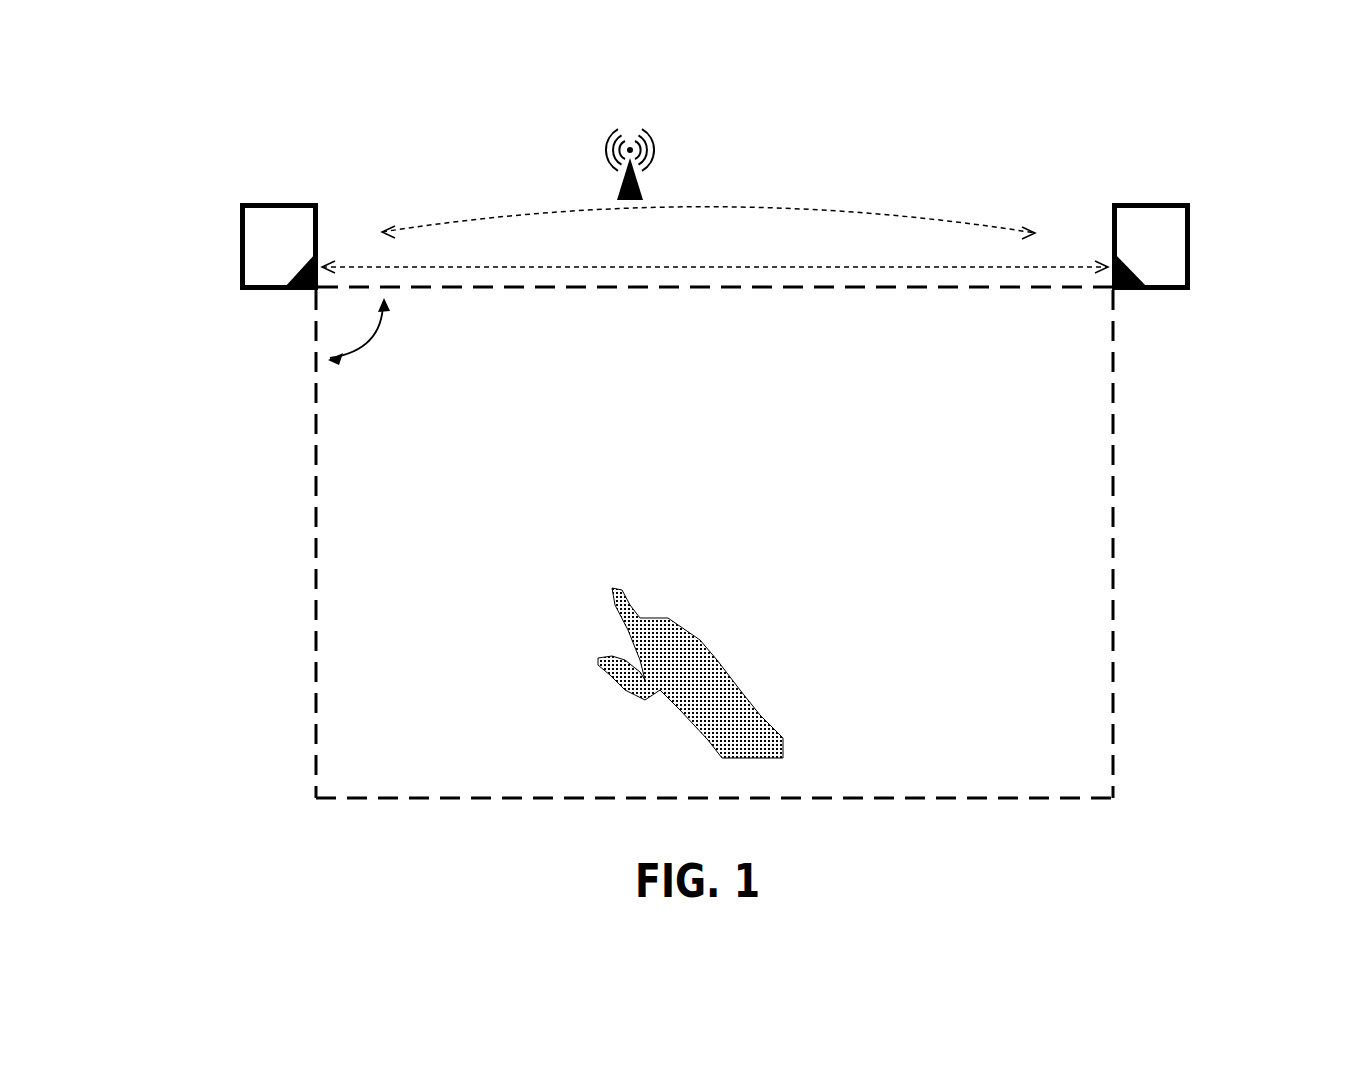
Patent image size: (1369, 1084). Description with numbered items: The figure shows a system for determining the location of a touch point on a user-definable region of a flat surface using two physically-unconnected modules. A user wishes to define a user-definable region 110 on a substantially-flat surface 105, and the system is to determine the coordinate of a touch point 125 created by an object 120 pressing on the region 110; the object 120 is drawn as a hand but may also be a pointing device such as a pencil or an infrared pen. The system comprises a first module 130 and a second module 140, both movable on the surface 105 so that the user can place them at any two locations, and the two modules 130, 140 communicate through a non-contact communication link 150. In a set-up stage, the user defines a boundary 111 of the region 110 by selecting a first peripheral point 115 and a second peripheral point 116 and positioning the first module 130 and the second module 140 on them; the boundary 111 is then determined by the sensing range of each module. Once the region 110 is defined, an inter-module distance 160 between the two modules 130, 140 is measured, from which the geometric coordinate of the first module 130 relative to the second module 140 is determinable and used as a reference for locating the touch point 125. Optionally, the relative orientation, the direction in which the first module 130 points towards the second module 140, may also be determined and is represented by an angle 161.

The substantially-flat surface 105 is at (700, 460).
The user-definable region 110 is at (1083, 707).
The boundary 111 is at (1118, 478).
The first peripheral point 115 is at (296, 302).
The second peripheral point 116 is at (1129, 304).
The object 120 is at (713, 680).
The touch point 125 is at (600, 608).
The first module 130 is at (265, 226).
The second module 140 is at (1155, 222).
The non-contact communication link 150 is at (862, 213).
The inter-module distance 160 is at (705, 267).
The angle 161 is at (373, 338).